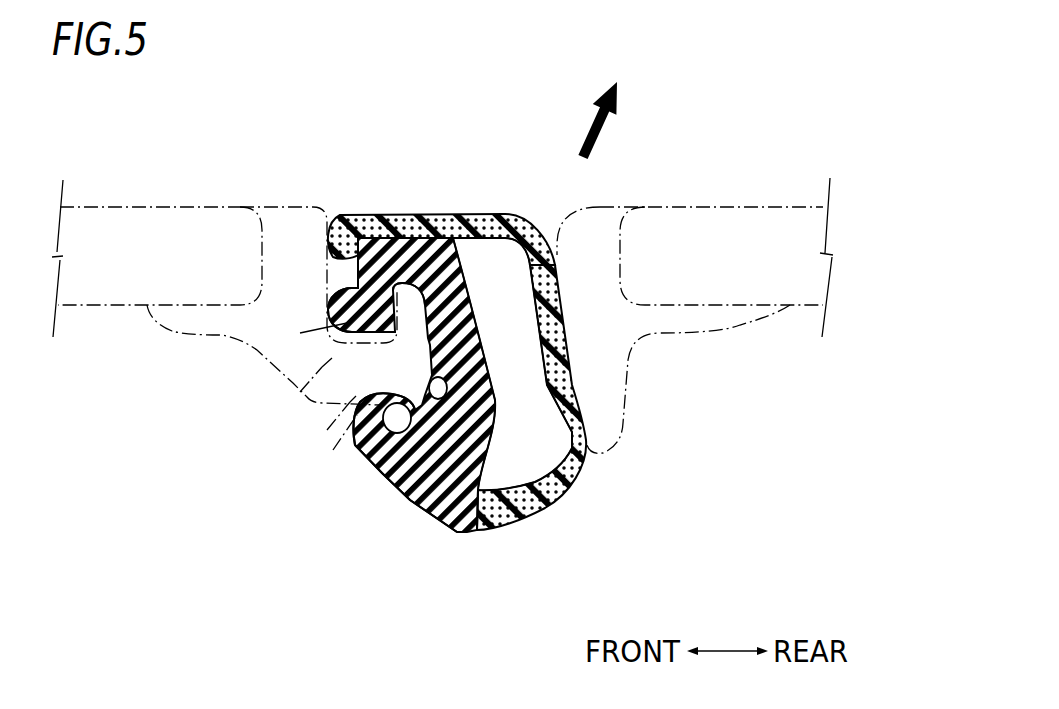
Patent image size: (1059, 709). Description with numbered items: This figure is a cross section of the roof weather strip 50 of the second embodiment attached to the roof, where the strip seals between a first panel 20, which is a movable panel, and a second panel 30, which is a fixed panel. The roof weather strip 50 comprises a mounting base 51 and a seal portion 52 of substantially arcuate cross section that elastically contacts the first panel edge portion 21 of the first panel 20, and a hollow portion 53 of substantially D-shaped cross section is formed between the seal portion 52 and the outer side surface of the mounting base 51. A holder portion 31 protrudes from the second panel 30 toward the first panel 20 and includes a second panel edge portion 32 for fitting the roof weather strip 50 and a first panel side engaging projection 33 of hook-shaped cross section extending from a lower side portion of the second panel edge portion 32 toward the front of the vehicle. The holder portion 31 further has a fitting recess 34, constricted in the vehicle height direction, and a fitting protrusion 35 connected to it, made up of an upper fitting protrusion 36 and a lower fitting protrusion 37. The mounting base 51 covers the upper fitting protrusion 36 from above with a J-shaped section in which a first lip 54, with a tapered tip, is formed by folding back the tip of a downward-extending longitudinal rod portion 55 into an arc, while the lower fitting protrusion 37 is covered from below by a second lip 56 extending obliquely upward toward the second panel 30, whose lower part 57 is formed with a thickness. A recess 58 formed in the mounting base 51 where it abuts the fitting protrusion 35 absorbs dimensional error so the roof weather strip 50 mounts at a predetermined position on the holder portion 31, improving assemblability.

The first panel 20 is at (750, 188).
The first panel edge portion 21 is at (615, 222).
The second panel 30 is at (145, 188).
The holder portion 31 is at (217, 340).
The second panel edge portion 32 is at (292, 237).
The first panel side engaging projection 33 is at (300, 392).
The fitting recess 34 is at (300, 333).
The fitting protrusion 35 is at (221, 472).
The upper fitting protrusion 36 is at (327, 430).
The lower fitting protrusion 37 is at (333, 450).
The roof weather strip 50 is at (473, 371).
The mounting base 51 is at (457, 342).
The seal portion 52 is at (568, 470).
The hollow portion 53 is at (513, 463).
The first lip 54 is at (333, 300).
The longitudinal rod portion 55 is at (372, 300).
The second lip 56 is at (341, 430).
The lower part 57 is at (405, 420).
The recess 58 is at (410, 295).